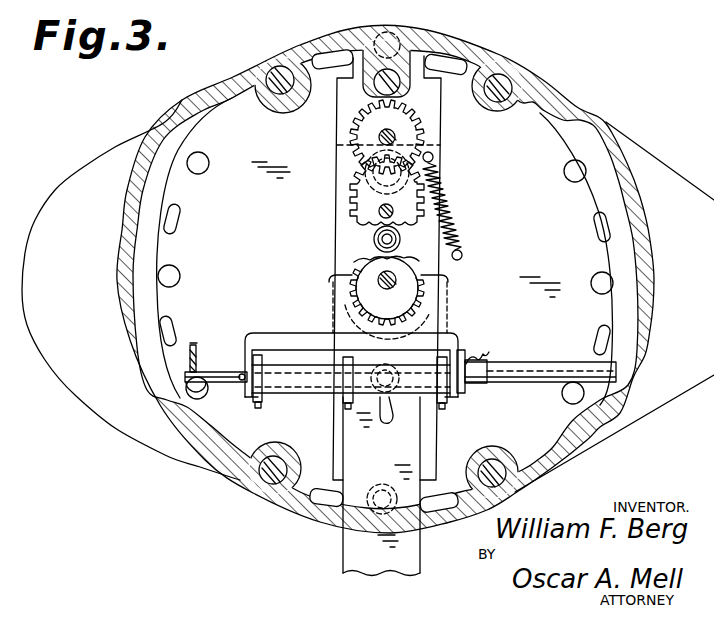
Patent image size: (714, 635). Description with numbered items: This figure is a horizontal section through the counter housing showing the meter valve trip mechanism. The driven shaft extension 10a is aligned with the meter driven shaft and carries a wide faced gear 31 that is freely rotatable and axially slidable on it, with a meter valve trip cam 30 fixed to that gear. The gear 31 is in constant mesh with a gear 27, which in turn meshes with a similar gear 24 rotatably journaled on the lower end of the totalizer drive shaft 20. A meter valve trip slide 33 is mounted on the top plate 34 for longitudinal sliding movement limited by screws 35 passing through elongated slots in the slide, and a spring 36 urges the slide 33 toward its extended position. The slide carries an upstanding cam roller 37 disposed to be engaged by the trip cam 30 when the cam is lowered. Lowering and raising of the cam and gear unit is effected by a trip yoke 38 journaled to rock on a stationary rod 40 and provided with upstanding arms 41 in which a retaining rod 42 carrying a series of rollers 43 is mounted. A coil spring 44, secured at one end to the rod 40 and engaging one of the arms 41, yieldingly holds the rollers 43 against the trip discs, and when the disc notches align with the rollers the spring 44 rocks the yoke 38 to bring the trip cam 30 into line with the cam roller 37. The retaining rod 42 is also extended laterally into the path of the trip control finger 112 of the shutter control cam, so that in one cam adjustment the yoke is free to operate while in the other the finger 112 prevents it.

The driven shaft extension 10a is at (492, 309).
The totalizer drive shaft 20 is at (390, 134).
The gear 24 is at (353, 118).
The gear 27 is at (350, 202).
The meter valve trip cam 30 is at (358, 259).
The wide faced gear 31 is at (425, 279).
The meter valve trip slide 33 is at (434, 250).
The top plate 34 is at (252, 246).
The screws 35 is at (378, 414).
The spring 36 is at (447, 210).
The cam roller 37 is at (373, 240).
The trip yoke 38 is at (296, 340).
The stationary rod 40 is at (538, 363).
The upstanding arms 41 is at (252, 398).
The retaining rod 42 is at (208, 372).
The rollers 43 is at (347, 400).
The coil spring 44 is at (477, 356).
The trip control finger 112 is at (193, 347).